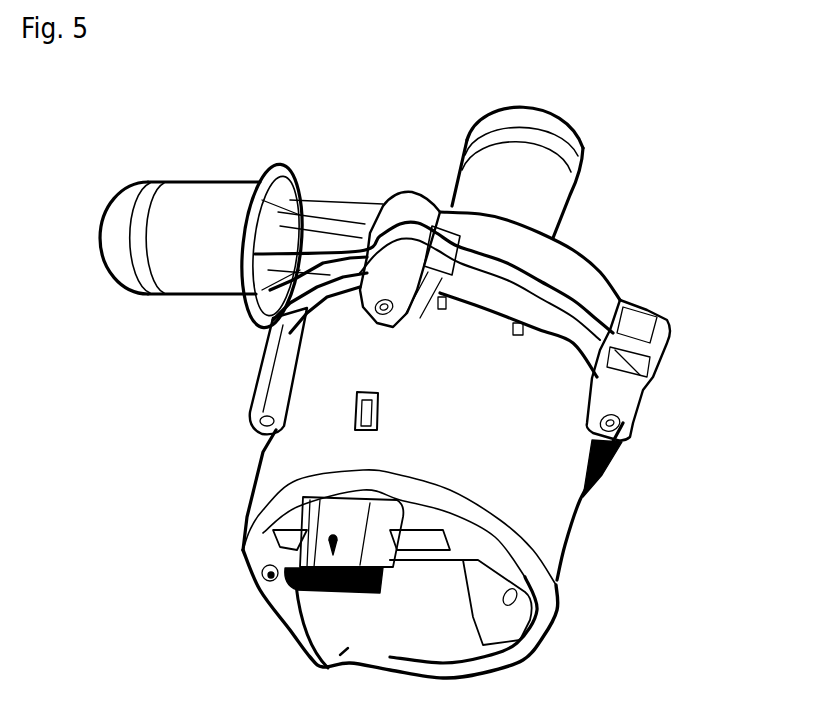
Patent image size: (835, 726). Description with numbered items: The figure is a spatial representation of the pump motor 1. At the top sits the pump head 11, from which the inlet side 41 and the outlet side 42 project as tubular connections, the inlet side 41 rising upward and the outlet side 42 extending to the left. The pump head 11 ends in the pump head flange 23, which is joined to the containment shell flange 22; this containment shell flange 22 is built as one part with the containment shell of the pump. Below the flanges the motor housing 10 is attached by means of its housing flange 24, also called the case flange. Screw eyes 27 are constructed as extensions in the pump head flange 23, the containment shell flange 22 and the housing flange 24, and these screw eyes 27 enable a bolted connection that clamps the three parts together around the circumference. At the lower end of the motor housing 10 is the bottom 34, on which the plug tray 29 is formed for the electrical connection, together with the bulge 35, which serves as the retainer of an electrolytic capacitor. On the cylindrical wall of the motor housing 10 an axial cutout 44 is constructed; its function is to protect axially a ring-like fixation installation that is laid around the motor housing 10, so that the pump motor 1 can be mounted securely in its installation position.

The pump motor 1 is at (727, 139).
The motor housing 10 is at (514, 441).
The pump head 11 is at (575, 263).
The containment shell flange 22 is at (600, 340).
The pump head flange 23 is at (405, 217).
The housing flange 24 is at (633, 370).
The screw eyes 27 is at (408, 213).
The plug tray 29 is at (320, 512).
The bottom 34 is at (287, 600).
The bulge 35 is at (463, 641).
The inlet side 41 is at (540, 175).
The outlet side 42 is at (183, 207).
The axial cutout 44 is at (375, 392).